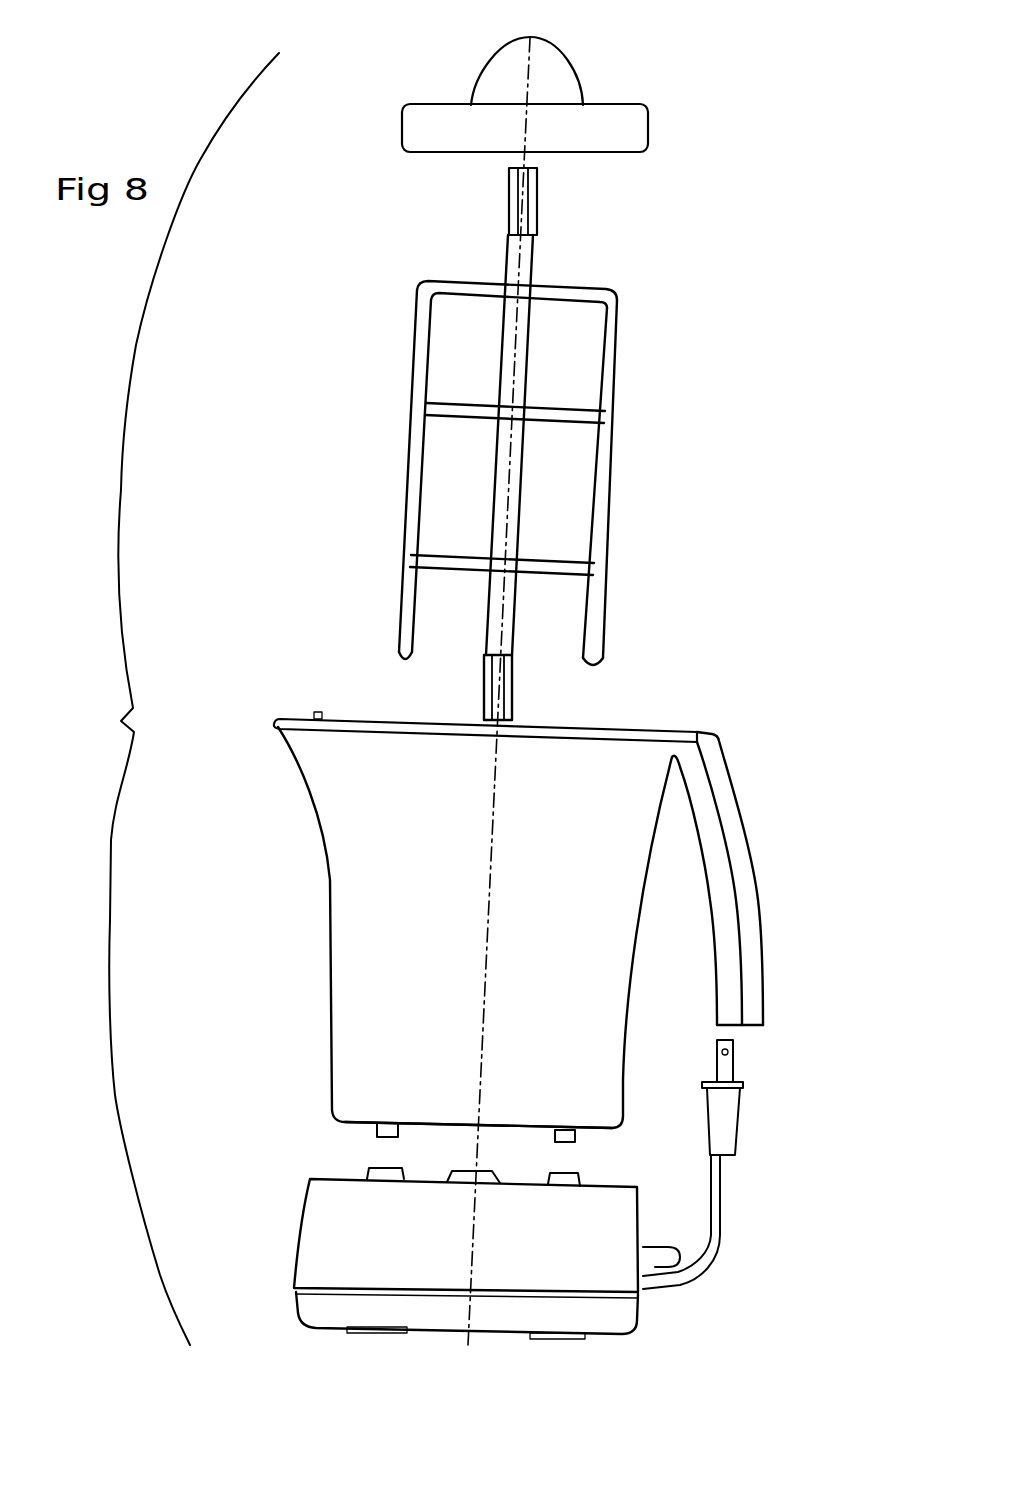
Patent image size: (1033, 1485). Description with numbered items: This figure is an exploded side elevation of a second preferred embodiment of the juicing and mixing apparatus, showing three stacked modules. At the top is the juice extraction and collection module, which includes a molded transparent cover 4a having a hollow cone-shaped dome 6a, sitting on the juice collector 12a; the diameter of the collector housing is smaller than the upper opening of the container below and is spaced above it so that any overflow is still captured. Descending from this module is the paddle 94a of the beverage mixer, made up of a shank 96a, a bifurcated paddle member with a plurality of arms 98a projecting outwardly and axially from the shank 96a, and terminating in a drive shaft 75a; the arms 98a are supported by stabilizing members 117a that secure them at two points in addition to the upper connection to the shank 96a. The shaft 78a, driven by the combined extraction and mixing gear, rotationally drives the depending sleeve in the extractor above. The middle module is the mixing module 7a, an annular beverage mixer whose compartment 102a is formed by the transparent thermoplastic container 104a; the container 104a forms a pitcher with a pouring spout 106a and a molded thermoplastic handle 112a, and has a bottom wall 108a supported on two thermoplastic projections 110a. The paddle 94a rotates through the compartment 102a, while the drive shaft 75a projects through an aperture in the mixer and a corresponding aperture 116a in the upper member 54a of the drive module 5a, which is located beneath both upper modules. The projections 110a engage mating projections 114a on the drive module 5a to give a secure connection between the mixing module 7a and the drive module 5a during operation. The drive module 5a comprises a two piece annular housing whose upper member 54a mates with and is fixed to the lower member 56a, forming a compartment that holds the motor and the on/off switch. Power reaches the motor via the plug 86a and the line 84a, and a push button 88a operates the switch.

The cover 4a is at (565, 72).
The dome 6a is at (494, 50).
The juice collector 12a is at (625, 130).
The shaft 78a is at (540, 200).
The shank 96a is at (510, 495).
The paddle 94a is at (376, 478).
The arms 98a is at (610, 487).
The stabilizing members 117a is at (575, 390).
The drive shaft 75a is at (515, 697).
The mixing module 7a is at (240, 942).
The pouring spout 106a is at (272, 720).
The container 104a is at (326, 982).
The bottom wall 108a is at (500, 1118).
The beverage mixer compartment 102a is at (605, 878).
The handle 112a is at (752, 932).
The projections 110a is at (376, 1128).
The drive module 5a is at (282, 1222).
The upper member 54a is at (628, 1224).
The mating projections 114a is at (410, 1156).
The aperture 116a is at (473, 1173).
The lower member 56a is at (615, 1318).
The push button 88a is at (665, 1262).
The plug 86a is at (730, 1100).
The line 84a is at (727, 1173).